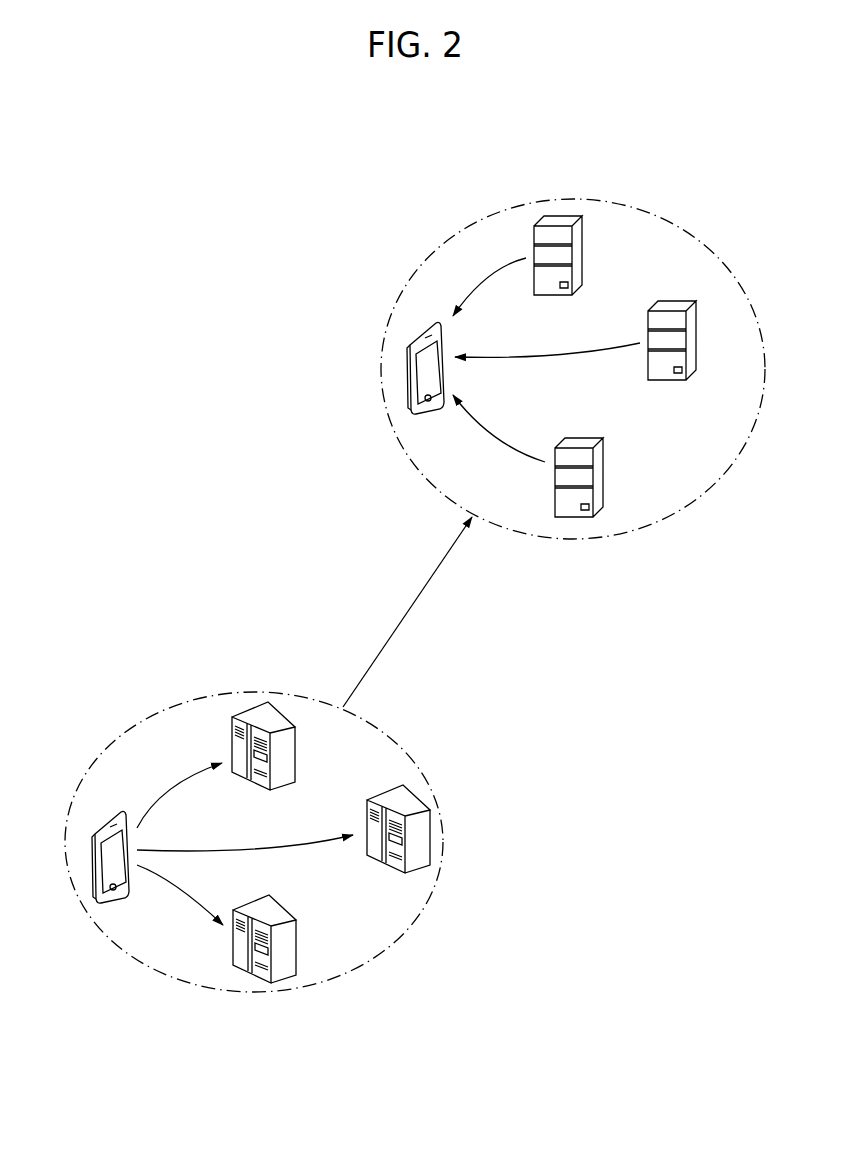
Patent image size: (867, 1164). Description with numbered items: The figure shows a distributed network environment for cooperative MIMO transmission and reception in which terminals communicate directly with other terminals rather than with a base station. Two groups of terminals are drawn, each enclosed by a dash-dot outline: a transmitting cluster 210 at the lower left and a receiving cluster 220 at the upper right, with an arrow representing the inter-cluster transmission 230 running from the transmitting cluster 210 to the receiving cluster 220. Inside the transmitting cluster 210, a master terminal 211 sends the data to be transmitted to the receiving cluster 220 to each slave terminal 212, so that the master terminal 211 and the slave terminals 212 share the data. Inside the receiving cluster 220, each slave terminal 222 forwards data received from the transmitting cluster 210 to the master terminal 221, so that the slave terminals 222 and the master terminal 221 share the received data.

The transmitting cluster 210 is at (203, 990).
The master terminal 211 is at (108, 882).
The slave terminal 212 is at (245, 712).
The receiving cluster 220 is at (452, 240).
The master terminal 221 is at (410, 342).
The slave terminal 222 is at (548, 218).
The inter-cluster transmission 230 is at (413, 600).